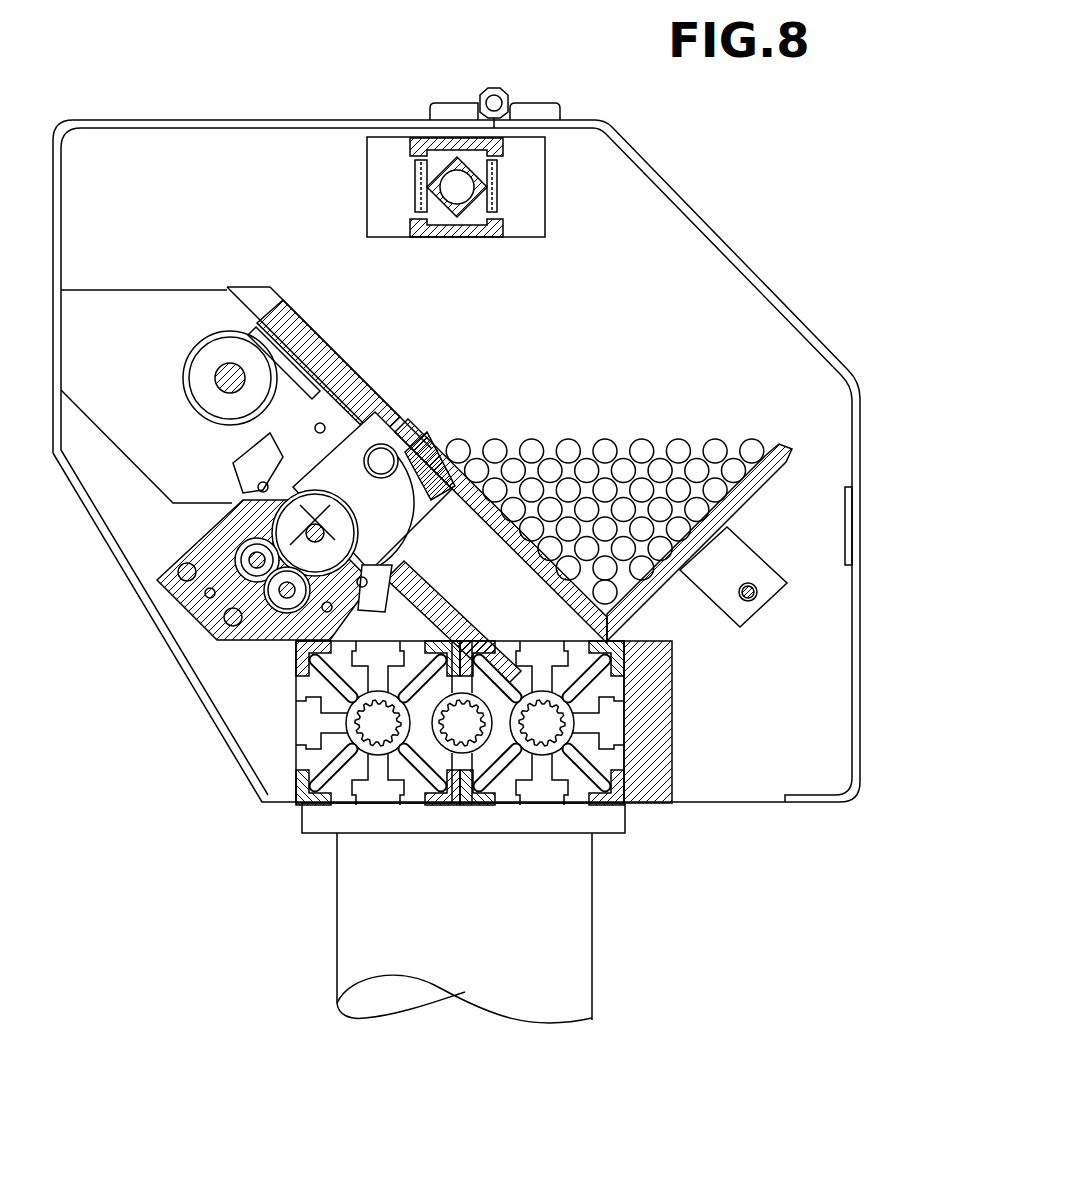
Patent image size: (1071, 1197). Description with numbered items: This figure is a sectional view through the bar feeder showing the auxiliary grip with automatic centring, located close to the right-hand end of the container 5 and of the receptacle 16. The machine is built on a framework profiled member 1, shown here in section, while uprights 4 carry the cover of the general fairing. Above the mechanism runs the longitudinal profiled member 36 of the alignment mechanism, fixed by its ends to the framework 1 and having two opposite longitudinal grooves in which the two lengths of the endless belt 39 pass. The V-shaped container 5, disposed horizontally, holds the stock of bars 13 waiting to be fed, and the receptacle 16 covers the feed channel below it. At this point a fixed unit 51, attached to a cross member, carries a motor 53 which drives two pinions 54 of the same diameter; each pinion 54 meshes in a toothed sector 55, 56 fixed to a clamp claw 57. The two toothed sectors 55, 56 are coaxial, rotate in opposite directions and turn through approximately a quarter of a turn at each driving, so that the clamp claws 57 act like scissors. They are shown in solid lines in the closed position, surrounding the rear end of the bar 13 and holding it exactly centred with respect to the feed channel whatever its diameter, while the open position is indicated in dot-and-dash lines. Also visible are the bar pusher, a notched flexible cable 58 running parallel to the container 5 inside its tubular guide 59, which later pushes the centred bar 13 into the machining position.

The framework profiled member 1 is at (330, 783).
The uprights 4 is at (420, 918).
The container 5 is at (797, 452).
The bar 13 is at (385, 443).
The receptacle 16 is at (290, 325).
The longitudinal profiled member 36 is at (405, 153).
The endless belt 39 is at (497, 183).
The fixed unit 51 is at (170, 585).
The motor 53 is at (250, 623).
The pinions 54 is at (250, 558).
The toothed sector 55 is at (243, 493).
The toothed sector 56 is at (385, 537).
The clamp claw 57 is at (347, 428).
The flexible cable 58 is at (752, 600).
The tubular guide 59 is at (748, 583).